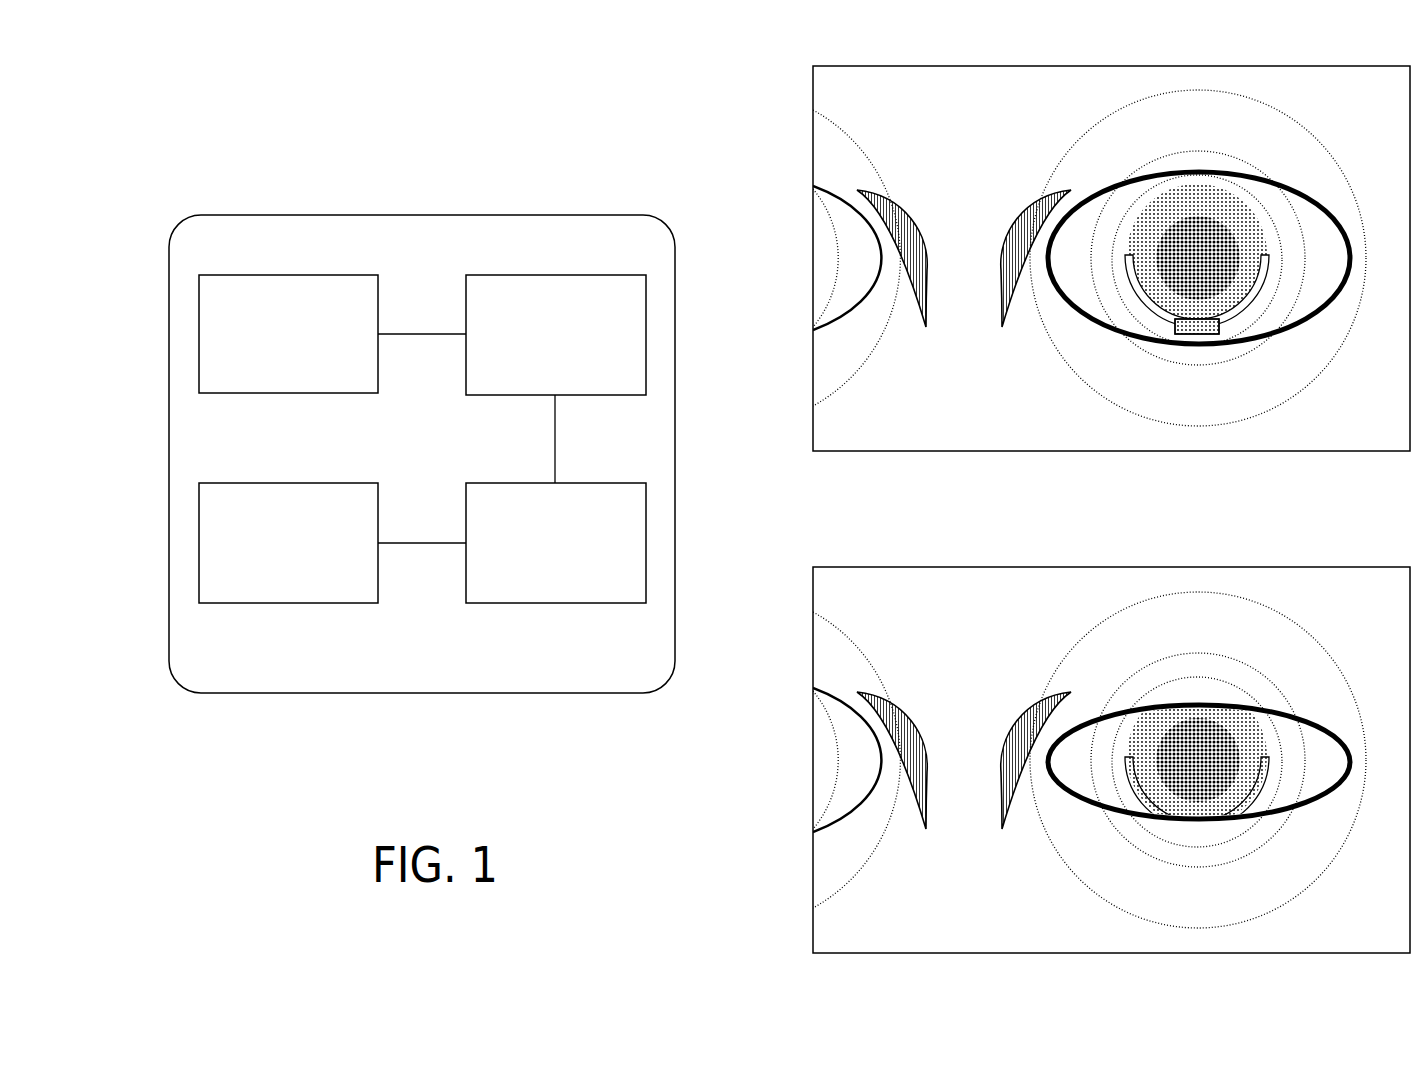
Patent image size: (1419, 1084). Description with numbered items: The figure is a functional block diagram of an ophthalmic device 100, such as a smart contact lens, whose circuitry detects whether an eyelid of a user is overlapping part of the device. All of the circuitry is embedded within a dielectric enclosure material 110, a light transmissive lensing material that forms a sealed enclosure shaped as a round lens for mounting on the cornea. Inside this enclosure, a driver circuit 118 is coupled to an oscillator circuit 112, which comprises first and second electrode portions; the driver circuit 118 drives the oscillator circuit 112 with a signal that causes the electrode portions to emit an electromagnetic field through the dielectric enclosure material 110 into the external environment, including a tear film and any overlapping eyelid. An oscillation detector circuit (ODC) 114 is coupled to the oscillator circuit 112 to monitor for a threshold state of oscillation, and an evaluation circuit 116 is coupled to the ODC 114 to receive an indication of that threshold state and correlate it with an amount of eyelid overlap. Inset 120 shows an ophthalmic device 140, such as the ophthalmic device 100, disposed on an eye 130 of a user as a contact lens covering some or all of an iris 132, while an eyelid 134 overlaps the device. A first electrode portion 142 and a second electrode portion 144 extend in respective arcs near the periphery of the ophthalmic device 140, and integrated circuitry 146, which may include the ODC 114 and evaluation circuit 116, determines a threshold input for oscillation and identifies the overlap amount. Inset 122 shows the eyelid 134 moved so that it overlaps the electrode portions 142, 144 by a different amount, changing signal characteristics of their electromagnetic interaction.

The ophthalmic device 100 is at (160, 114).
The dielectric enclosure material 110 is at (604, 681).
The oscillator circuit 112 is at (577, 378).
The oscillation detector circuit (ODC) 114 is at (577, 569).
The evaluation circuit 116 is at (310, 583).
The driver circuit 118 is at (310, 362).
The inset 120 is at (1337, 66).
The inset 122 is at (1337, 567).
The eye 130 is at (1324, 250).
The iris 132 is at (1147, 208).
The eyelid 134 is at (1302, 334).
The ophthalmic device 140 is at (1086, 289).
The first electrode portion 142 is at (1130, 310).
The second electrode portion 144 is at (1248, 324).
The integrated circuitry 146 is at (1171, 333).